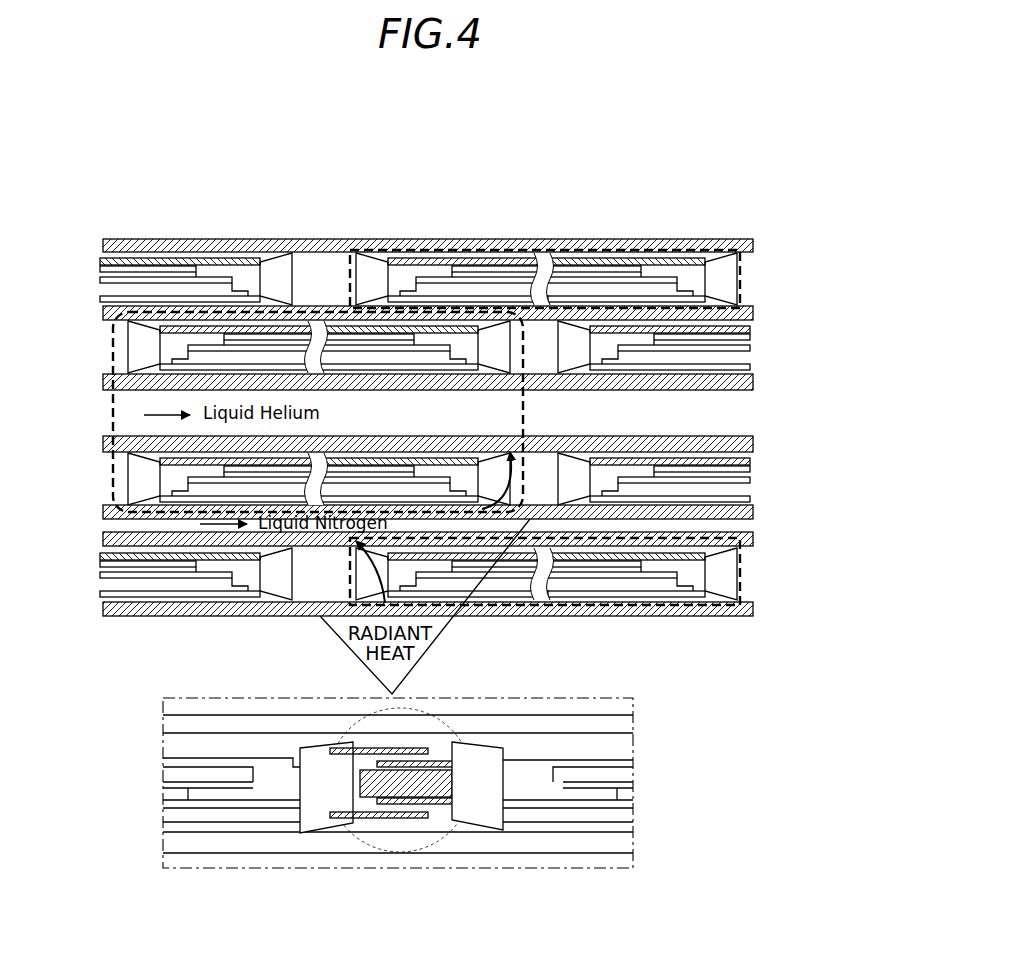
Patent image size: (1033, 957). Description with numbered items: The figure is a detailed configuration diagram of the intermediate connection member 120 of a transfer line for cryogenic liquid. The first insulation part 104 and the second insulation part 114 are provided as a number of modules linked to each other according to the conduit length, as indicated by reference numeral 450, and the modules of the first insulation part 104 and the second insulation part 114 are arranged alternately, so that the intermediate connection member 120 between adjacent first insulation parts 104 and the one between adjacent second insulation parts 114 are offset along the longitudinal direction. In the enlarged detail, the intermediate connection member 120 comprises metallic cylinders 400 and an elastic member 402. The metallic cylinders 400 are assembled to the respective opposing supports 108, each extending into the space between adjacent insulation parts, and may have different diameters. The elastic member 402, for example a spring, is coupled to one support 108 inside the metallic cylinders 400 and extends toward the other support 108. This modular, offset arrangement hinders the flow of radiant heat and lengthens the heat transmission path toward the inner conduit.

The first insulation part 104 is at (112, 412).
The second insulation part 114 is at (753, 283).
The modularized insulation parts 450 is at (506, 234).
The intermediate connection member 120 is at (363, 845).
The elastic member 402 is at (400, 783).
The metallic cylinders 400 is at (437, 803).
The support 108 is at (485, 818).